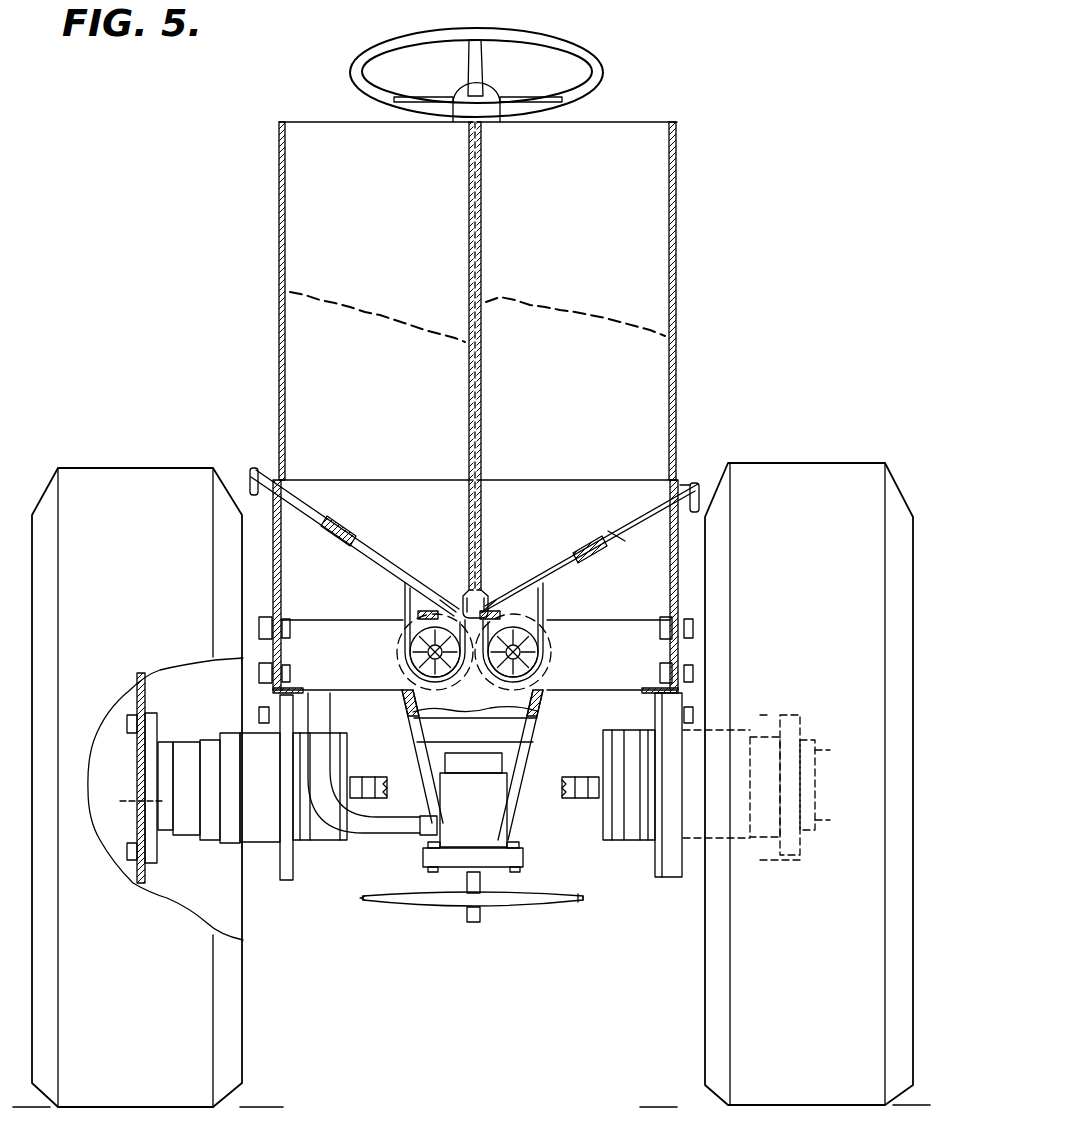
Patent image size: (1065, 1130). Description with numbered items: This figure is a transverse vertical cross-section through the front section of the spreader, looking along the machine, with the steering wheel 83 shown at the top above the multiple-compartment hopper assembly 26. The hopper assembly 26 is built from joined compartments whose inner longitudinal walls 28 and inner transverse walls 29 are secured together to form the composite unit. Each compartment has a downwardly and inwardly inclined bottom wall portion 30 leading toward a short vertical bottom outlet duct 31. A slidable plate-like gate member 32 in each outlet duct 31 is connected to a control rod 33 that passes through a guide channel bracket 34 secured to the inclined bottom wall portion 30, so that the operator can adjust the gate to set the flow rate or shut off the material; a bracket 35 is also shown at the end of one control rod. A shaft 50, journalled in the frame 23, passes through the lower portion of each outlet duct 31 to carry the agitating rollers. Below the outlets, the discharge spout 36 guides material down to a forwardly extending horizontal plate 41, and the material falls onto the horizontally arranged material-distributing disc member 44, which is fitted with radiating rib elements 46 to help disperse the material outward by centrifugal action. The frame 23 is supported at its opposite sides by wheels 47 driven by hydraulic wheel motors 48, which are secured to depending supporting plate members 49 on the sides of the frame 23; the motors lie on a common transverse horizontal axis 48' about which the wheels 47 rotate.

The steering wheel 83 is at (573, 58).
The multiple-compartment hopper assembly 26 is at (646, 121).
The inner transverse walls 29 is at (362, 227).
The inner longitudinal walls 28 is at (468, 398).
The inclined bottom wall portion 30 is at (386, 520).
The control rod 33 is at (256, 467).
The baffle hook bracket 35 is at (693, 482).
The guide channel bracket 34 is at (623, 538).
The gate member 32 is at (432, 605).
The bottom outlet duct 31 is at (403, 602).
The shaft 50 is at (396, 667).
The frame 23 is at (575, 690).
The discharge spout 36 is at (520, 790).
The horizontal plate 41 is at (524, 862).
The material-distributing disc member 44 is at (583, 908).
The radiating rib elements 46 is at (447, 912).
The common transverse horizontal axis 48' is at (453, 764).
The depending supporting plate members 49 is at (268, 882).
The hydraulic wheel motors 48 is at (459, 799).
The wheels 47 is at (235, 1063).